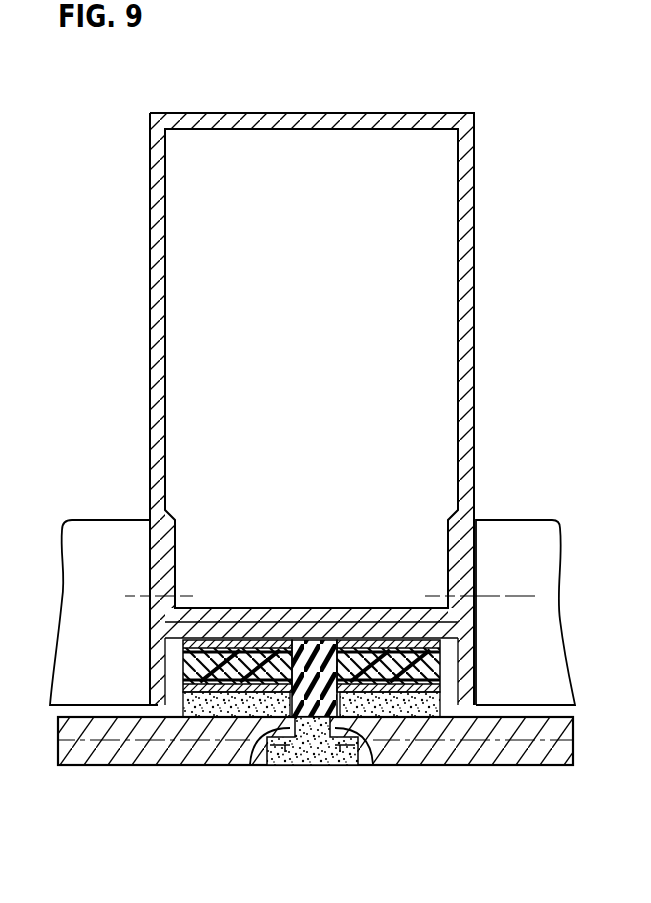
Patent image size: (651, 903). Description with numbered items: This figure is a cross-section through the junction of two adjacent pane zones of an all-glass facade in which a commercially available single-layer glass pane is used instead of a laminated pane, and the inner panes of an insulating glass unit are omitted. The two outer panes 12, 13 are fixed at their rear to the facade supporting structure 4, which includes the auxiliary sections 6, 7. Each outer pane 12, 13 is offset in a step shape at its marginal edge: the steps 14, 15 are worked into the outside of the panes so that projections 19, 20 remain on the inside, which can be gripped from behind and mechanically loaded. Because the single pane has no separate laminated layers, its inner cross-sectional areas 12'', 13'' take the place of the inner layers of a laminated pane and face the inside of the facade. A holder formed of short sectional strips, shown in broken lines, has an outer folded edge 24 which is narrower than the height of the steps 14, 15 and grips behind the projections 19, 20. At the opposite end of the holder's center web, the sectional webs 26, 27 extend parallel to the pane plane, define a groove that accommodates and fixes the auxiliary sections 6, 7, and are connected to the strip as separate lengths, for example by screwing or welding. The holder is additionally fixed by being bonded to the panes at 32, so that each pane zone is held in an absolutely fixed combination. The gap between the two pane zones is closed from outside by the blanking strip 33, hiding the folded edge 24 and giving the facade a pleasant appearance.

The facade supporting structure 4 is at (476, 373).
The auxiliary section 6 is at (150, 549).
The auxiliary section 7 is at (474, 557).
The outer pane 12 is at (315, 780).
The inner cross-sectional area 12'' is at (521, 780).
The outer pane 13 is at (315, 783).
The inner cross-sectional area 13'' is at (109, 772).
The step 14 is at (347, 766).
The step 15 is at (278, 766).
The projection 19 is at (372, 766).
The projection 20 is at (250, 766).
The folded edge 24 is at (335, 766).
The sectional web 26 is at (440, 682).
The sectional web 27 is at (183, 685).
The bond 32 is at (440, 700).
The blanking strip 33 is at (307, 640).